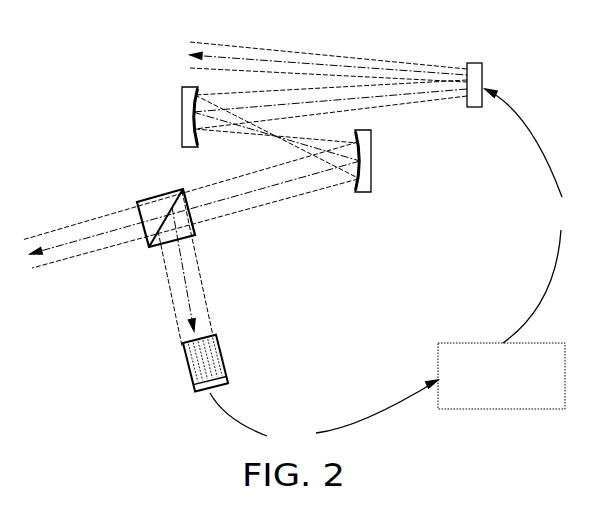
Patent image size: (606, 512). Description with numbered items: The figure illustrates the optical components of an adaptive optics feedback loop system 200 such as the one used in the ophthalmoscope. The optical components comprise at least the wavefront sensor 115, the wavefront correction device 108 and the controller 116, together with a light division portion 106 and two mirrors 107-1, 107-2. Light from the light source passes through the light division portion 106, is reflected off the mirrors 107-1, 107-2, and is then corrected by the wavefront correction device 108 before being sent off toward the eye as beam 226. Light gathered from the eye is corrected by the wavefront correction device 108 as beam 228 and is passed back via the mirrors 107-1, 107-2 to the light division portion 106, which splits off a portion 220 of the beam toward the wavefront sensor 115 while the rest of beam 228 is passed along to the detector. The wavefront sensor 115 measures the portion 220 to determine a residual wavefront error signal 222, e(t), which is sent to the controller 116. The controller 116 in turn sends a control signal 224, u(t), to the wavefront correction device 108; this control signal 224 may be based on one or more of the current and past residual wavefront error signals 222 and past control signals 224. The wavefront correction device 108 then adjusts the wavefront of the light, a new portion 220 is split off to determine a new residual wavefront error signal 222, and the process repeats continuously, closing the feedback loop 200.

The feedback loop system 200 is at (53, 50).
The wavefront correction device 108 is at (472, 63).
The beam 226 is at (310, 74).
The mirror 107-2 is at (182, 97).
The mirror 107-1 is at (372, 181).
The beam 228 is at (86, 239).
The light division portion 106 is at (196, 236).
The portion of the beam of light 220 is at (188, 301).
The wavefront sensor 115 is at (222, 346).
The residual wavefront error signal 222 is at (346, 422).
The controller 116 is at (501, 376).
The control signal 224 is at (554, 182).